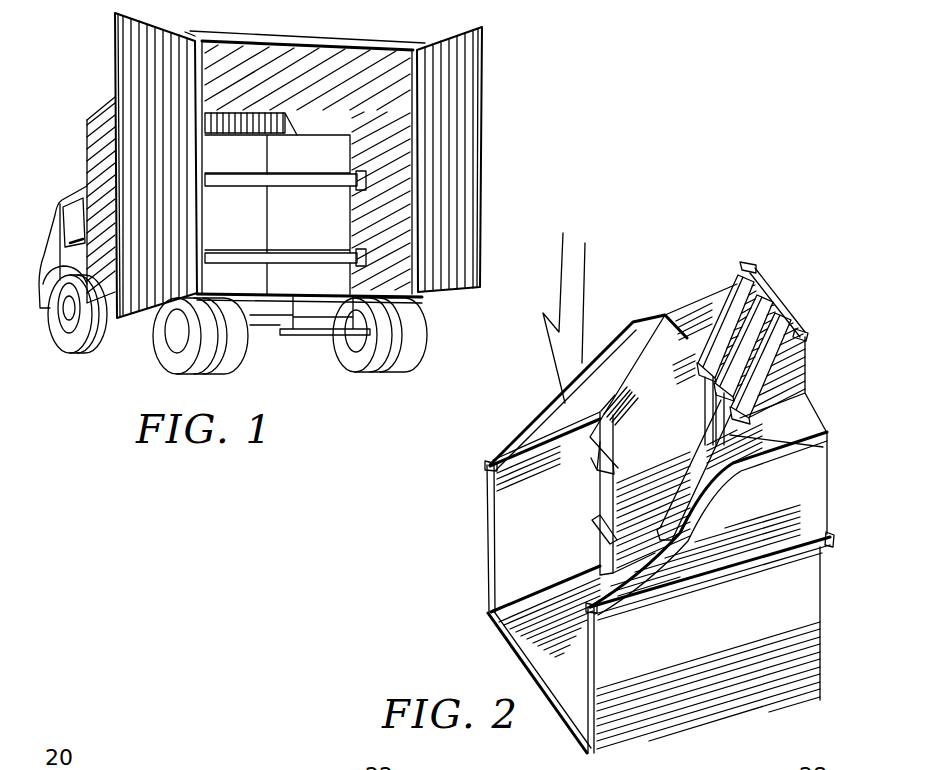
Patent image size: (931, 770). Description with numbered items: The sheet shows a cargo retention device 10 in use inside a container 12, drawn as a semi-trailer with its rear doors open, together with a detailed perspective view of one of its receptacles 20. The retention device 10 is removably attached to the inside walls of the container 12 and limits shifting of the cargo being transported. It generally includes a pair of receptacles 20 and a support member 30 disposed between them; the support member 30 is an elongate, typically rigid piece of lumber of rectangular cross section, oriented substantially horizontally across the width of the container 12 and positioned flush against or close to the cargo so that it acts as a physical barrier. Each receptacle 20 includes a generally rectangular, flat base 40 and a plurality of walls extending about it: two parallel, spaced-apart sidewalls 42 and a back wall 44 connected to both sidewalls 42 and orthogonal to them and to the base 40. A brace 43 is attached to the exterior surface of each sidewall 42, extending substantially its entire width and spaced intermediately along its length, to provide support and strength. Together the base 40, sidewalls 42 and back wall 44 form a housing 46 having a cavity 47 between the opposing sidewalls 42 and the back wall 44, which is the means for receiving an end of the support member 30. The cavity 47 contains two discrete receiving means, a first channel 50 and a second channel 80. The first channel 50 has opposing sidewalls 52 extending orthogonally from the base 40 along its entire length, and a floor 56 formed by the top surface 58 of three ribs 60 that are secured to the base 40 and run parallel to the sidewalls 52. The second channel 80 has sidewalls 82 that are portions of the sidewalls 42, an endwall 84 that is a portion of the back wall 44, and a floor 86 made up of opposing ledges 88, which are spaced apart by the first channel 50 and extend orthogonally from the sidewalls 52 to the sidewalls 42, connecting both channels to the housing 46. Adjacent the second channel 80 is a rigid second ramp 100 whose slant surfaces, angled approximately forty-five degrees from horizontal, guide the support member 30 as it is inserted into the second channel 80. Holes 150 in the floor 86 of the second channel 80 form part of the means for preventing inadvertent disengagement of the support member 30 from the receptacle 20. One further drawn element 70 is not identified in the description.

In FIG. 1, the cargo retention device 10 is at (312, 266).
In FIG. 1, the container 12 is at (296, 60).
In FIG. 1, the receptacle 20 is at (372, 181).
In FIG. 2, the receptacle 20 is at (474, 632).
In FIG. 1, the support member 30 is at (293, 173).
In FIG. 2, the base 40 is at (747, 267).
In FIG. 2, the sidewalls 42 is at (485, 579).
In FIG. 2, the brace 43 is at (808, 534).
In FIG. 2, the back wall 44 is at (515, 674).
In FIG. 2, the housing 46 is at (502, 593).
In FIG. 2, the cavity 47 is at (550, 440).
In FIG. 2, the first channel 50 is at (673, 398).
In FIG. 2, the sidewalls of first channel 52 is at (661, 485).
In FIG. 2, the floor of first channel 56 is at (719, 421).
In FIG. 2, the top surface of ribs 58 is at (704, 410).
In FIG. 2, the ribs 60 is at (743, 313).
In FIG. 2, the slat 70 is at (723, 320).
In FIG. 2, the second channel 80 is at (509, 538).
In FIG. 2, the sidewalls of second channel 82 is at (546, 576).
In FIG. 2, the endwall of second channel 84 is at (556, 661).
In FIG. 2, the floor of second channel 86 is at (600, 492).
In FIG. 2, the ledges 88 is at (603, 507).
In FIG. 2, the second ramp 100 is at (628, 370).
In FIG. 2, the holes 150 is at (567, 485).